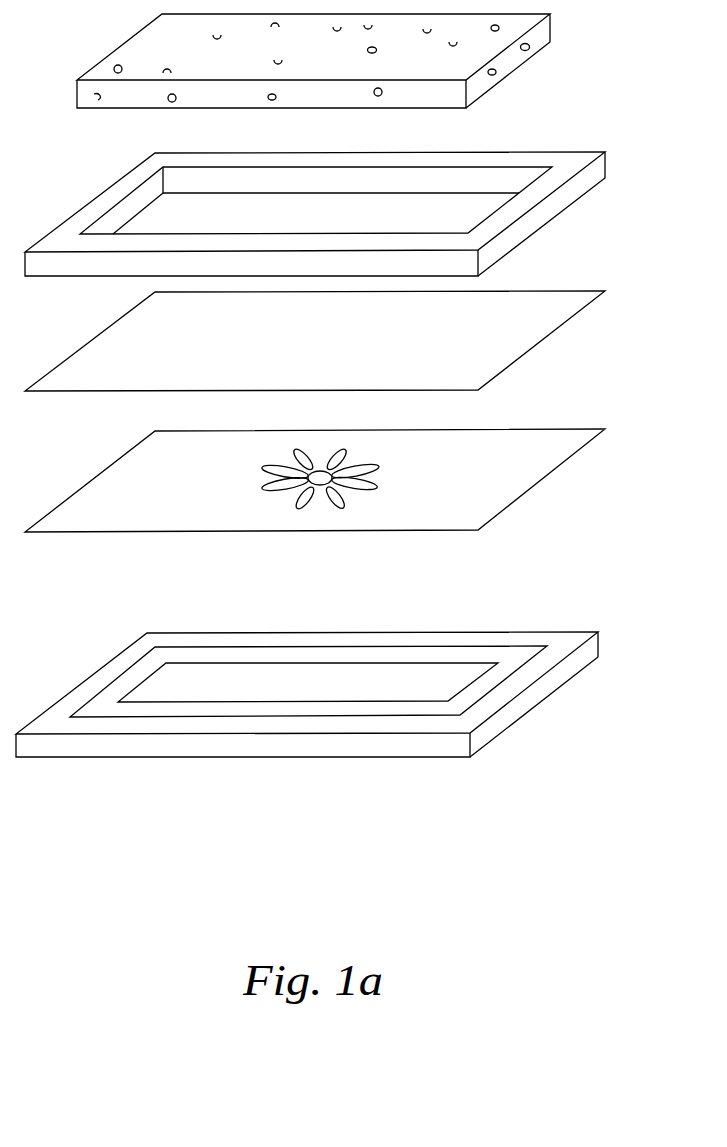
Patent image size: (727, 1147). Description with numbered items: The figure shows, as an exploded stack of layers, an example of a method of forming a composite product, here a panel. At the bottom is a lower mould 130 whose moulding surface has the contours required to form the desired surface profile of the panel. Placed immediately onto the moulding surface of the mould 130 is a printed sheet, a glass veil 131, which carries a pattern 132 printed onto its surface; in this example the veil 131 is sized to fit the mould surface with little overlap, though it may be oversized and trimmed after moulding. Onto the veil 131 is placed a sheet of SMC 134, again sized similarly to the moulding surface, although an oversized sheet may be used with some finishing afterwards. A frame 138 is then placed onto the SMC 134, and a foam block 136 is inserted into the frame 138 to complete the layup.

The lower mould 130 is at (530, 698).
The glass veil 131 is at (540, 483).
The pattern 132 is at (367, 466).
The sheet of SMC 134 is at (537, 347).
The foam block 136 is at (527, 60).
The frame 138 is at (540, 212).